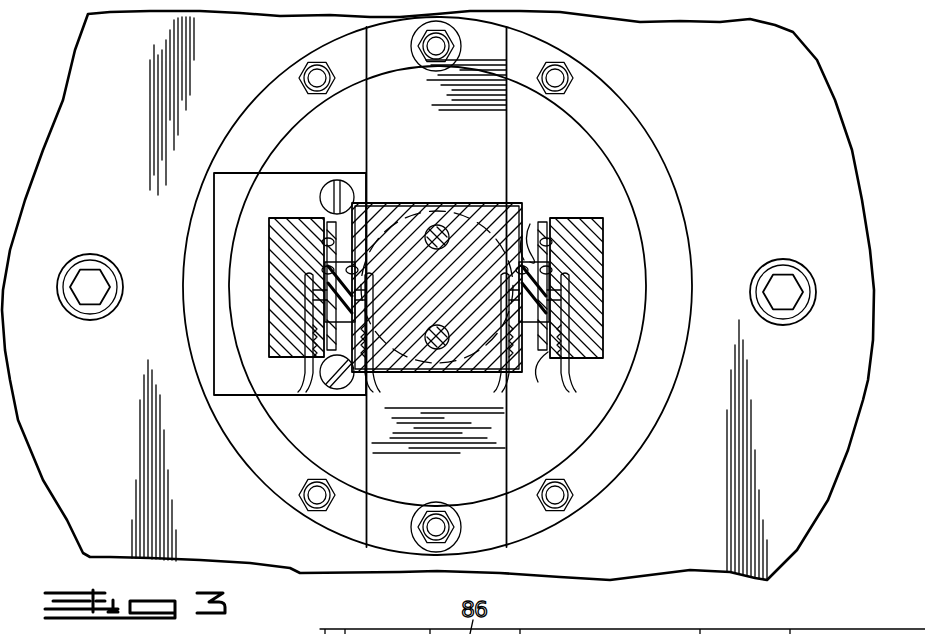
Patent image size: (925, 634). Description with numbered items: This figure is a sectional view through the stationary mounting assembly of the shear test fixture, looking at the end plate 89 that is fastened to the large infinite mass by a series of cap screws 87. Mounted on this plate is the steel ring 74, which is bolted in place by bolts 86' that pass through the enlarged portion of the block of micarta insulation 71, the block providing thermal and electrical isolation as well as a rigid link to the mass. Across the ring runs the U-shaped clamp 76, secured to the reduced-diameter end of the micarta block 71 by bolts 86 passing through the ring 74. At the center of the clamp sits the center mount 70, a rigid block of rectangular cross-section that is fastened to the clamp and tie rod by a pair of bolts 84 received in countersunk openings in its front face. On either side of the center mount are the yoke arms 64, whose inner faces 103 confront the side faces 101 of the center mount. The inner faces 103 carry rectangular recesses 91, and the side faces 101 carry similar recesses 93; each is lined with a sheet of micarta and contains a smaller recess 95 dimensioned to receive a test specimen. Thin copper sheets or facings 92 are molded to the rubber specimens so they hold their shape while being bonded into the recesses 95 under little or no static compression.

The yoke arm 64 is at (283, 222).
The center mount 70 is at (418, 212).
The block of micarta insulation 71 is at (745, 633).
The steel ring 74 is at (270, 103).
The U-shaped clamp 76 is at (437, 287).
The bolts 84 is at (436, 350).
The bolts 86 is at (417, 286).
The bolts 86' is at (452, 292).
The cap screws 87 is at (90, 320).
The end plate 89 is at (101, 155).
The rectangular recess 91 is at (327, 241).
The copper sheet or facing 92 is at (303, 310).
The recess 93 is at (530, 230).
The smaller recess 95 is at (322, 270).
The side face 101 is at (525, 238).
The inner face 103 is at (327, 193).